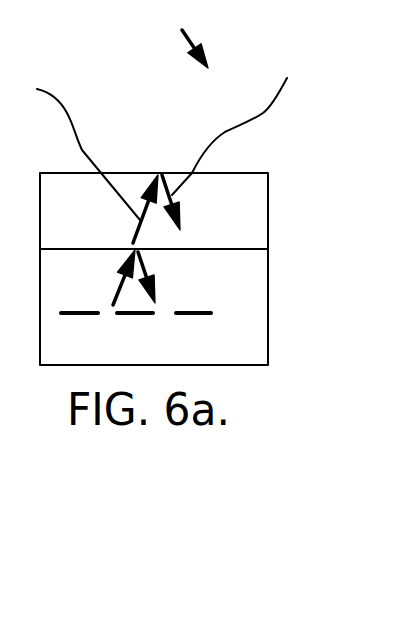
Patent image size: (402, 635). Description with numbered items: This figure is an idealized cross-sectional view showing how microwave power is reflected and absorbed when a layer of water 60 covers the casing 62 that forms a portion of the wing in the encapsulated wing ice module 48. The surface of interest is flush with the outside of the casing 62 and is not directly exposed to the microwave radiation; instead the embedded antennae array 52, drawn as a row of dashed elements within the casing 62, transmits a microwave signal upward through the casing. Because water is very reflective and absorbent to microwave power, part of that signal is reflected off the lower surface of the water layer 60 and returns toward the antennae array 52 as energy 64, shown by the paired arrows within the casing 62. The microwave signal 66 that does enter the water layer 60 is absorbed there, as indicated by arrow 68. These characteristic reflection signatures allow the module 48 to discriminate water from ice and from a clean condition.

The wing ice module 48 is at (182, 34).
The patch antenna 52 is at (210, 314).
The water layer 60 is at (268, 202).
The casing 62 is at (269, 282).
The reflected energy 64 is at (142, 265).
The microwave signal 66 is at (83, 139).
The absorption arrow 68 is at (252, 123).